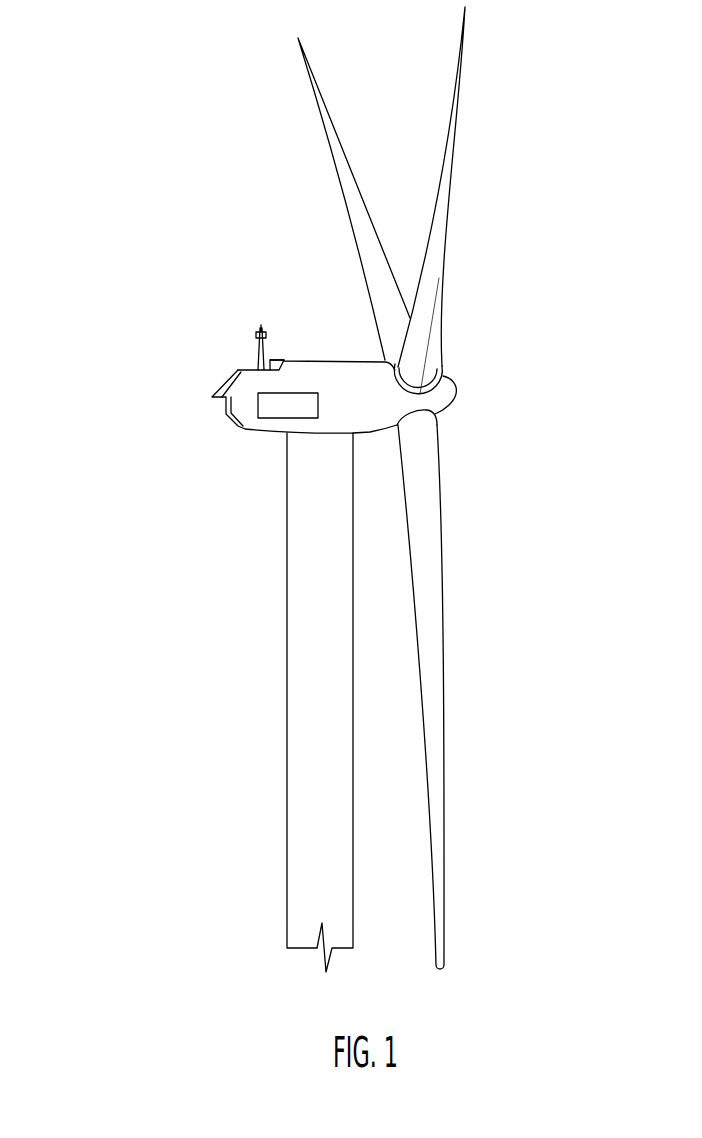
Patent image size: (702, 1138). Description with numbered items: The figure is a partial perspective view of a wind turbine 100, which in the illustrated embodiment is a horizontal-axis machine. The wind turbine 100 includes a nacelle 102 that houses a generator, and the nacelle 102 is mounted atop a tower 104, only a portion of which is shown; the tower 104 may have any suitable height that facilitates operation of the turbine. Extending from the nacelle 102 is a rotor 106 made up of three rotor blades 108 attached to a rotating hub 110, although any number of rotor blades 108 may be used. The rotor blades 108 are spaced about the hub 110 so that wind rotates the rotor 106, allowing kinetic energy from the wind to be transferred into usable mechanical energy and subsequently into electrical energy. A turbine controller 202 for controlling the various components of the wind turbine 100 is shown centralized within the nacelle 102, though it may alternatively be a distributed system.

The wind turbine 100 is at (154, 116).
The nacelle 102 is at (241, 446).
The tower 104 is at (317, 642).
The rotor 106 is at (491, 347).
The rotor blades 108 is at (322, 98).
The rotating hub 110 is at (460, 403).
The turbine controller 202 is at (273, 403).